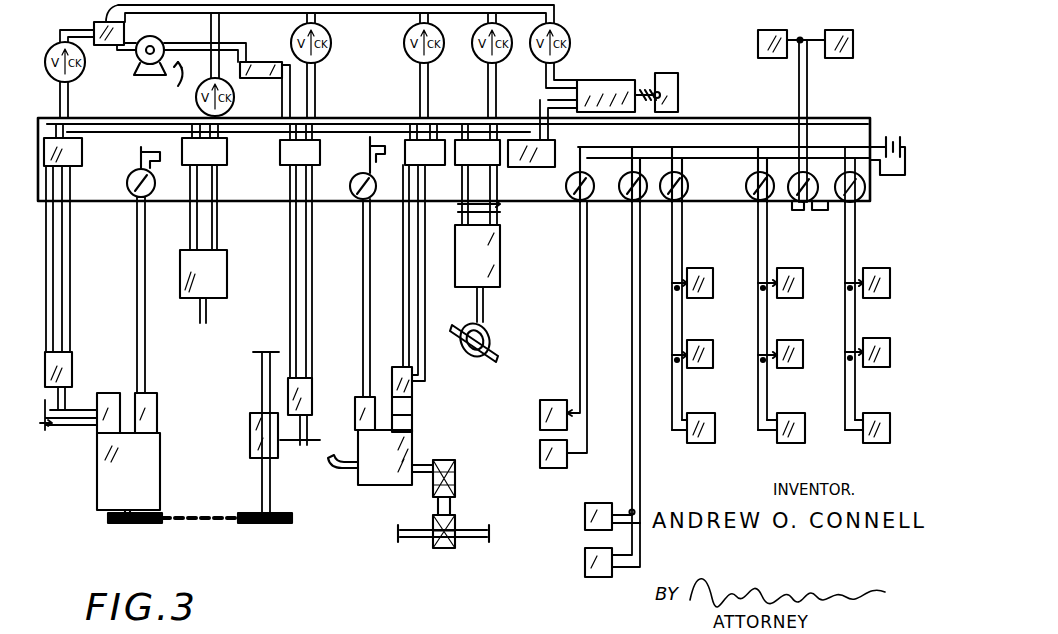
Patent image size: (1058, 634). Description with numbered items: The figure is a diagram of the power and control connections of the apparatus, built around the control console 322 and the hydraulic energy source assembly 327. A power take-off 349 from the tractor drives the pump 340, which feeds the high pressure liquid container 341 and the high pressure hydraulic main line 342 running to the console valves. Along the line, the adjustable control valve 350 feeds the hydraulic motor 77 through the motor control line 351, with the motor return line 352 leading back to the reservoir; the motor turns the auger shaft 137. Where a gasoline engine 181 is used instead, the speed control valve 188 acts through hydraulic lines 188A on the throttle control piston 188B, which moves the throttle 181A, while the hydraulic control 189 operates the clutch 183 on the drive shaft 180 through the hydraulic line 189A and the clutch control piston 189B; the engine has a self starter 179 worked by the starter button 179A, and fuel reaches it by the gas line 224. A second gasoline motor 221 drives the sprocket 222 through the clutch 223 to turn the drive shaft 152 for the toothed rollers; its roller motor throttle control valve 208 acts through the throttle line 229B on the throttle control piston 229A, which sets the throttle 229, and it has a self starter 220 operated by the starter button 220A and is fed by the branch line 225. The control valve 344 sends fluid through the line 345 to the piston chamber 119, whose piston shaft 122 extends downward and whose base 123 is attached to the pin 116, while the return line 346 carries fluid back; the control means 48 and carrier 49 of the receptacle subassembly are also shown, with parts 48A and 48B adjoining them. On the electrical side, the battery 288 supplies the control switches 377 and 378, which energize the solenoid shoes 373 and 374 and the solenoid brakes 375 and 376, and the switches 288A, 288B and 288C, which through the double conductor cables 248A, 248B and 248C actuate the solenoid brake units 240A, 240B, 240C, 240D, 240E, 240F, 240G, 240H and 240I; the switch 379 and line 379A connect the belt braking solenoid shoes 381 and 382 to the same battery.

The energy source assembly 327 is at (92, 28).
The power take-off 349 is at (137, 62).
The pump 340 is at (159, 80).
The high pressure liquid container 341 is at (262, 62).
The high pressure hydraulic main line 342 is at (370, 128).
The control console 322 is at (125, 156).
The speed control valve 188 is at (76, 156).
The starter button 179A is at (130, 191).
The hydraulic lines 188A is at (77, 305).
The throttle control piston 188B is at (72, 363).
The gas line 224 is at (82, 426).
The throttle 181A is at (113, 393).
The self starter 179 is at (158, 394).
The gasoline engine 181 is at (138, 483).
The drive shaft 180 is at (266, 480).
The clutch 183 is at (252, 434).
The adjustable control valve 350 is at (222, 163).
The high pressure motor control line 351 is at (189, 220).
The motor return line 352 is at (218, 222).
The hydraulic motor 77 is at (215, 278).
The auger shaft 137 is at (208, 318).
The hydraulic control 189 is at (316, 163).
The hydraulic line 189A is at (327, 292).
The clutch control piston 189B is at (311, 380).
The starter button 220A is at (352, 200).
The self starter 220 is at (355, 407).
The roller motor throttle control valve 208 is at (441, 163).
The throttle line 229B is at (423, 333).
The throttle control piston 229A is at (412, 392).
The throttle 229 is at (463, 415).
The branch line 225 is at (353, 470).
The gasoline motor 221 is at (395, 463).
The clutch 223 is at (437, 480).
The sprocket 222 is at (451, 527).
The drive shaft 152 is at (423, 538).
The control valve 344 is at (492, 163).
The piston shaft 122 is at (480, 195).
The line 345 is at (500, 206).
The return line 346 is at (497, 215).
The piston chamber 119 is at (490, 268).
The base 123 is at (474, 284).
The pin 116 is at (498, 348).
The valve 48B is at (545, 167).
The control means 48 is at (610, 80).
The coupling 48A is at (651, 90).
The compartmentalized carrier 49 is at (672, 84).
The solenoid shoe 381 is at (758, 42).
The solenoid shoe 382 is at (853, 48).
The line 379A is at (797, 73).
The switch 379 is at (812, 176).
The battery 288 is at (907, 134).
The control switch 377 is at (573, 172).
The control switch 378 is at (637, 172).
The switch 288A is at (685, 190).
The switch 288B is at (762, 172).
The switch 288C is at (828, 212).
The solenoid shoe 373 is at (541, 400).
The solenoid shoe 374 is at (540, 447).
The solenoid brake 375 is at (585, 516).
The solenoid brake 376 is at (585, 560).
The double conductor cable 248A is at (687, 249).
The solenoid brake unit 240A is at (724, 308).
The solenoid brake unit 240B is at (724, 378).
The solenoid brake unit 240C is at (721, 428).
The double conductor wires 248B is at (777, 249).
The solenoid brake unit 240D is at (814, 308).
The solenoid brake unit 240E is at (814, 378).
The solenoid brake unit 240F is at (811, 428).
The double conductor wires 248C is at (862, 249).
The solenoid brake unit 240G is at (901, 308).
The solenoid brake unit 240H is at (901, 378).
The solenoid brake unit 240I is at (897, 428).